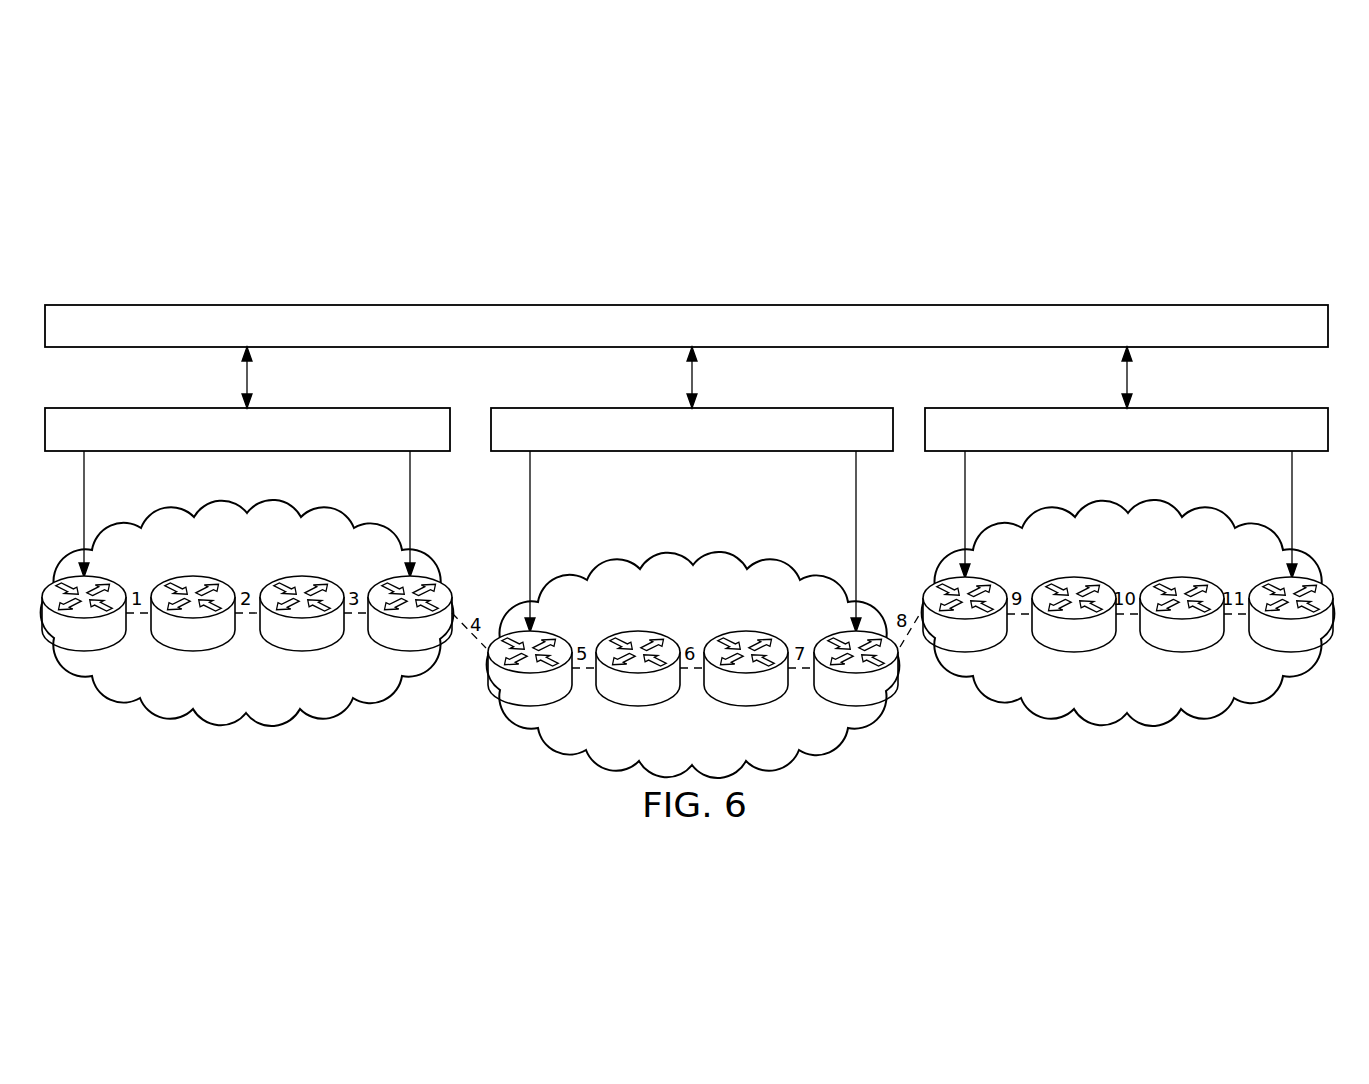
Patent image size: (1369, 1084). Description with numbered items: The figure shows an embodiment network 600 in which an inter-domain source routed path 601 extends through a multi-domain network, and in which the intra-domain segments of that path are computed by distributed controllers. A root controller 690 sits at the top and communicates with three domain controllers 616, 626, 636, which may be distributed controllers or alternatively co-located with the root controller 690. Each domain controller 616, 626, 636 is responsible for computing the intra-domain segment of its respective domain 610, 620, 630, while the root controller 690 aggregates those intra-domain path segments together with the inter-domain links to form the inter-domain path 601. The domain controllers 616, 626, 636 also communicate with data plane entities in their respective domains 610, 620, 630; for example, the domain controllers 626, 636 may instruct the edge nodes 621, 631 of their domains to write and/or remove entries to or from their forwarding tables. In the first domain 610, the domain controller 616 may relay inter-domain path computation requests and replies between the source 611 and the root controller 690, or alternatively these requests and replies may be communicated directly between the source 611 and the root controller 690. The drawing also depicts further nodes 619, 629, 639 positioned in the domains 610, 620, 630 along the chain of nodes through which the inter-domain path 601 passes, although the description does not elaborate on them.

The network 600 is at (897, 218).
The root controller 690 is at (702, 305).
The domain controller 616 is at (217, 408).
The domain controller 626 is at (663, 408).
The domain controller 636 is at (1158, 408).
The domain 610 is at (176, 527).
The domain 620 is at (770, 583).
The domain 630 is at (1202, 528).
The source 611 is at (71, 652).
The node 3 of domain 1 (border node) 619 is at (430, 576).
The inter-domain path 601 is at (477, 650).
The edge node 621 is at (517, 708).
The node 7 of domain 2 (border node) 629 is at (871, 708).
The edge node 631 is at (953, 653).
The node 11 of domain 3 639 is at (1307, 653).